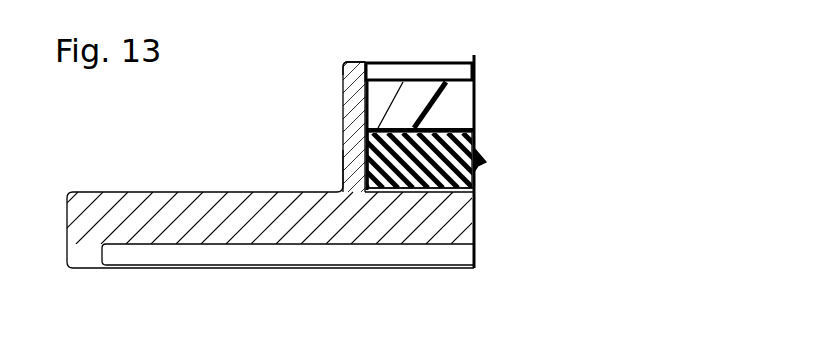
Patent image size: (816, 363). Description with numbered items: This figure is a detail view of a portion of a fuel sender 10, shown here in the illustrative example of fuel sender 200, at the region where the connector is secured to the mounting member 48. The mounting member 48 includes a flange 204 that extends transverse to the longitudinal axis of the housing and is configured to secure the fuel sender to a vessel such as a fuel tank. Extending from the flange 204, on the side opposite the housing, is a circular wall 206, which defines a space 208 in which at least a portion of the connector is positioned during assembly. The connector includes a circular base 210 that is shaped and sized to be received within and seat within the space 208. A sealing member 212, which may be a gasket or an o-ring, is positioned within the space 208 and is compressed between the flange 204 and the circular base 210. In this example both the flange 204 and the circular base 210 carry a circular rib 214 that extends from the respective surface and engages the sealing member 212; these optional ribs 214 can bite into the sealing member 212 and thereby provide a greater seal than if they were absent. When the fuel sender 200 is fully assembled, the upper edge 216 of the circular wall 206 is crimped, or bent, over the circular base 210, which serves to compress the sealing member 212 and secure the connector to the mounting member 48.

The fuel sender 10 is at (601, 78).
The mounting member 48 is at (163, 189).
The fuel sender 200 is at (559, 116).
The flange 204 is at (208, 268).
The circular wall 206 is at (340, 94).
The space 208 is at (428, 60).
The circular base 210 is at (449, 80).
The sealing member 212 is at (444, 128).
The circular rib 214 is at (419, 186).
The upper edge 216 is at (353, 62).